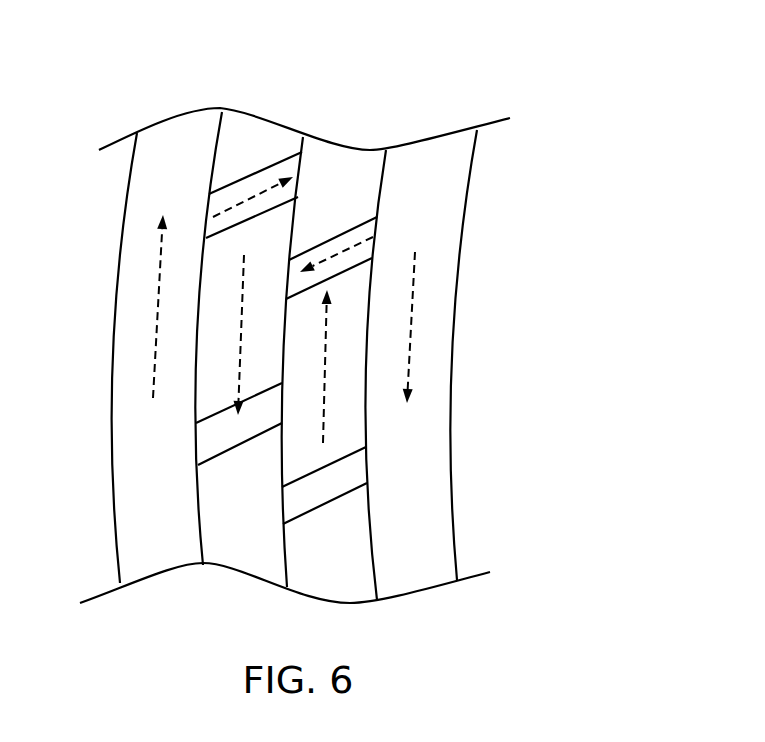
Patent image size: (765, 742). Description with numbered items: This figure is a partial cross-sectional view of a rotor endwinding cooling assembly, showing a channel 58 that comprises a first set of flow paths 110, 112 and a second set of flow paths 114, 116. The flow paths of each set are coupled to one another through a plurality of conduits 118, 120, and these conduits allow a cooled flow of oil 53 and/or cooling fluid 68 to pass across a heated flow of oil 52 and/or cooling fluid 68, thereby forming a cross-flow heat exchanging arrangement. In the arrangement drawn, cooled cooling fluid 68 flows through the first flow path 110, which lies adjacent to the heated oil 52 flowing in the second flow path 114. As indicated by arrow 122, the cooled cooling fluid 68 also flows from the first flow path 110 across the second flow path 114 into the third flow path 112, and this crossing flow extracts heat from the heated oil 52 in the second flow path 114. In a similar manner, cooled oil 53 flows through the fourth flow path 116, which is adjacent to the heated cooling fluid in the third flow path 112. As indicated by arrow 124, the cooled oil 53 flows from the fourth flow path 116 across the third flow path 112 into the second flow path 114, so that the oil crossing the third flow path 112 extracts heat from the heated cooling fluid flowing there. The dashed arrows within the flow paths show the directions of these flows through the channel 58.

The channel 58 is at (560, 189).
The first flow path 110 is at (135, 541).
The third flow path 112 is at (307, 567).
The second flow path 114 is at (218, 546).
The fourth flow path 116 is at (390, 562).
The conduit 118 is at (300, 152).
The conduit 120 is at (365, 222).
The arrow 122 is at (237, 204).
The arrow 124 is at (385, 250).
The heated flow of oil 52 is at (243, 260).
The cooled flow of oil 53 is at (410, 319).
The cooling fluid 68 is at (157, 307).